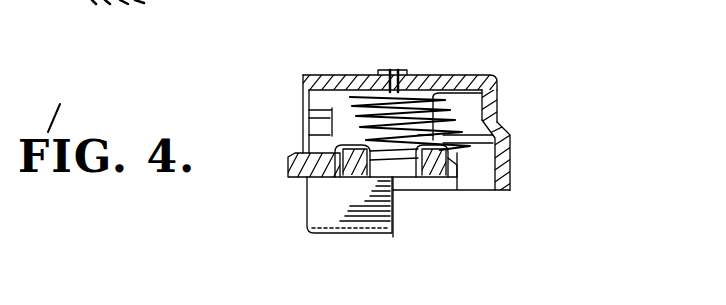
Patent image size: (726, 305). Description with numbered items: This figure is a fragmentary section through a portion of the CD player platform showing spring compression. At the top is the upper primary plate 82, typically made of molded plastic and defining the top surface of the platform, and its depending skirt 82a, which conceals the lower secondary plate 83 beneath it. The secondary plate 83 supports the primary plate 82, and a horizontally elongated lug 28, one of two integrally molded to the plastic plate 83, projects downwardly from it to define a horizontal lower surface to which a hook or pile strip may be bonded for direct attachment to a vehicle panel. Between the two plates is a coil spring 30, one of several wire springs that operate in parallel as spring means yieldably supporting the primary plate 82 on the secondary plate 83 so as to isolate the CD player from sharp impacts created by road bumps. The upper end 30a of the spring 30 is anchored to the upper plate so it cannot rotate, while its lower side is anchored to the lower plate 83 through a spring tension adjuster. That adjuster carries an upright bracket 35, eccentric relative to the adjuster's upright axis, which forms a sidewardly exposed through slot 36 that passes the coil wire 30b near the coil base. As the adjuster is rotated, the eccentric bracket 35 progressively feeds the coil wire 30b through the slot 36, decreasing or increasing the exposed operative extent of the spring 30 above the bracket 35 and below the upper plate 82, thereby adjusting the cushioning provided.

The horizontally elongated lug 28 is at (313, 220).
The coil spring 30 is at (452, 97).
The spring upper end 30a is at (394, 80).
The coil wire 30b is at (433, 160).
The upright bracket 35 is at (318, 122).
The through slot 36 is at (453, 157).
The upper primary plate 82 is at (325, 75).
The skirt 82a is at (512, 168).
The lower secondary plate 83 is at (292, 162).